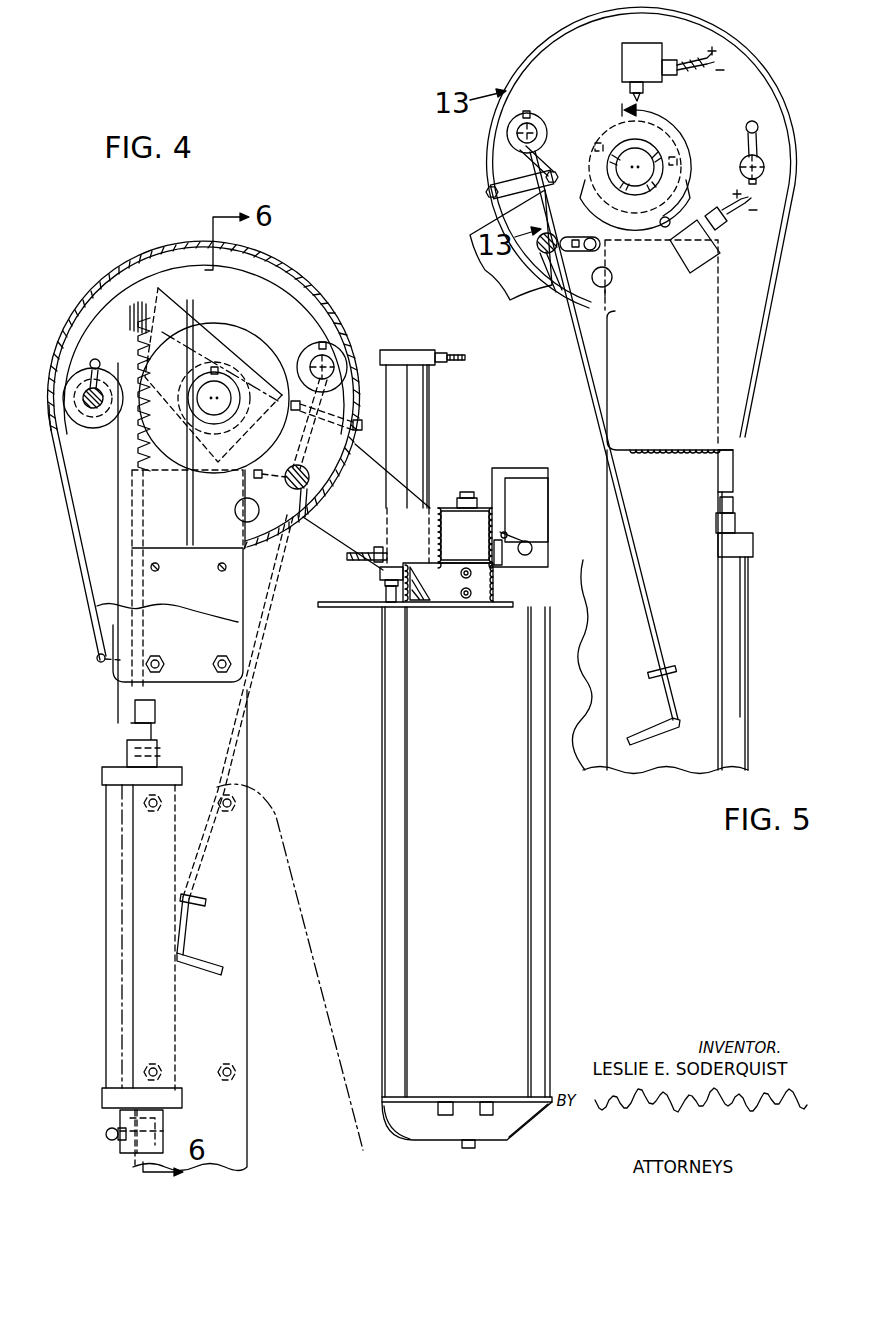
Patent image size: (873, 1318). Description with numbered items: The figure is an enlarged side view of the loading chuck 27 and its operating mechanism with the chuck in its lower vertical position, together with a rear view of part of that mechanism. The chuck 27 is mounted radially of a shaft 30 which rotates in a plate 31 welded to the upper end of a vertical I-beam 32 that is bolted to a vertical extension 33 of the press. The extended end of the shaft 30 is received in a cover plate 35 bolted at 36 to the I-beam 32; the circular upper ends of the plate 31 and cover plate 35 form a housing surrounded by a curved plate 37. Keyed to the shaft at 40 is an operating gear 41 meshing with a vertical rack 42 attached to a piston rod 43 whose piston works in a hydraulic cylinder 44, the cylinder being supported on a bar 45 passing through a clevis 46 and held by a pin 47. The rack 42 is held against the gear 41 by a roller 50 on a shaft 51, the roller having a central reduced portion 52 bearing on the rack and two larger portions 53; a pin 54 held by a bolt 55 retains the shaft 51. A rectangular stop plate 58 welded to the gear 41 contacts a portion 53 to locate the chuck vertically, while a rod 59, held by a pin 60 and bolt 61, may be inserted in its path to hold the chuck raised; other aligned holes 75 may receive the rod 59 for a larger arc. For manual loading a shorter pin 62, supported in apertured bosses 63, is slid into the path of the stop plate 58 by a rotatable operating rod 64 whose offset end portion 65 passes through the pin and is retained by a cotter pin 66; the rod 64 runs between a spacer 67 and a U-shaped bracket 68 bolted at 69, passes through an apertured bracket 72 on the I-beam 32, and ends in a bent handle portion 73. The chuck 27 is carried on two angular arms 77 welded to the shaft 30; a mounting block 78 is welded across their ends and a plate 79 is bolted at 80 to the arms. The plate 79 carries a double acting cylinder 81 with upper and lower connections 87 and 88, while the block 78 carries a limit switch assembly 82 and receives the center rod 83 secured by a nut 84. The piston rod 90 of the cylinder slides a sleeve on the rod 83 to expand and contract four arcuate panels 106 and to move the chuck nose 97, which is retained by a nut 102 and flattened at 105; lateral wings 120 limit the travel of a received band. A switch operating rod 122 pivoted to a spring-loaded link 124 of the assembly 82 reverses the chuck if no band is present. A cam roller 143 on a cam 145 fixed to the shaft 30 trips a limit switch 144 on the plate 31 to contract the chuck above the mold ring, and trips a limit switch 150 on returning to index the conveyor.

In FIG. 4, the chuck 27 is at (558, 872).
In FIG. 4, the shaft 30 is at (198, 394).
In FIG. 5, the shaft 30 is at (630, 148).
In FIG. 4, the plate 31 is at (95, 583).
In FIG. 5, the plate 31 is at (760, 319).
In FIG. 4, the I-beam 32 is at (243, 750).
In FIG. 5, the I-beam 32 is at (708, 493).
In FIG. 4, the vertical extension 33 is at (281, 865).
In FIG. 5, the vertical extension 33 is at (595, 760).
In FIG. 4, the cover plate 35 is at (232, 643).
In FIG. 5, the cover plate 35 is at (670, 382).
In FIG. 4, the bolts 36 is at (218, 571).
In FIG. 4, the curved plate 37 is at (78, 548).
In FIG. 5, the curved plate 37 is at (777, 292).
In FIG. 4, the key 40 is at (217, 368).
In FIG. 4, the operating gear 41 is at (160, 311).
In FIG. 4, the vertical rack 42 is at (118, 502).
In FIG. 5, the vertical rack 42 is at (733, 462).
In FIG. 4, the piston rod 43 is at (130, 733).
In FIG. 5, the piston rod 43 is at (734, 504).
In FIG. 4, the hydraulic cylinder 44 is at (106, 846).
In FIG. 5, the hydraulic cylinder 44 is at (738, 606).
In FIG. 4, the bar 45 is at (135, 1160).
In FIG. 4, the clevis 46 is at (120, 1115).
In FIG. 4, the pin 47 is at (106, 1134).
In FIG. 4, the roller 50 is at (71, 428).
In FIG. 4, the shaft 51 is at (98, 391).
In FIG. 5, the shaft 51 is at (760, 172).
In FIG. 4, the central reduced portion 52 is at (73, 387).
In FIG. 4, the larger portions 53 is at (108, 423).
In FIG. 4, the pin 54 is at (89, 360).
In FIG. 5, the pin 54 is at (748, 145).
In FIG. 4, the bolt 55 is at (95, 358).
In FIG. 5, the bolt 55 is at (746, 124).
In FIG. 4, the stop plate 58 is at (158, 305).
In FIG. 4, the rod 59 is at (302, 520).
In FIG. 5, the rod 59 is at (553, 283).
In FIG. 4, the pin 60 is at (303, 473).
In FIG. 5, the pin 60 is at (560, 296).
In FIG. 4, the bolt 61 is at (252, 478).
In FIG. 5, the bolt 61 is at (601, 249).
In FIG. 4, the pin 62 is at (326, 366).
In FIG. 5, the pin 62 is at (515, 135).
In FIG. 4, the apertured bosses 63 is at (311, 348).
In FIG. 5, the apertured bosses 63 is at (548, 128).
In FIG. 4, the operating rod 64 is at (266, 608).
In FIG. 5, the operating rod 64 is at (593, 418).
In FIG. 5, the offset end portion 65 is at (528, 163).
In FIG. 4, the cotter pin 66 is at (328, 334).
In FIG. 5, the cotter pin 66 is at (530, 118).
In FIG. 4, the spacer 67 is at (359, 418).
In FIG. 5, the U-shaped bracket 68 is at (525, 190).
In FIG. 4, the bolts 69 is at (360, 430).
In FIG. 5, the bolts 69 is at (489, 196).
In FIG. 4, the apertured bracket 72 is at (199, 905).
In FIG. 5, the apertured bracket 72 is at (671, 663).
In FIG. 4, the handle portion 73 is at (208, 975).
In FIG. 5, the handle portion 73 is at (660, 730).
In FIG. 4, the aligned holes 75 is at (243, 516).
In FIG. 5, the aligned holes 75 is at (608, 288).
In FIG. 4, the arms 77 is at (342, 527).
In FIG. 5, the arms 77 is at (492, 273).
In FIG. 4, the mounting block 78 is at (447, 506).
In FIG. 4, the plate 79 is at (383, 573).
In FIG. 4, the bolts 80 is at (388, 584).
In FIG. 4, the double acting cylinder 81 is at (430, 416).
In FIG. 4, the limit switch assembly 82 is at (545, 508).
In FIG. 4, the center rod 83 is at (467, 492).
In FIG. 4, the nut 84 is at (465, 535).
In FIG. 4, the upper connection 87 is at (443, 352).
In FIG. 4, the lower connection 88 is at (357, 550).
In FIG. 4, the piston rod 90 is at (398, 599).
In FIG. 4, the chuck nose 97 is at (401, 1137).
In FIG. 4, the nut 102 is at (452, 1142).
In FIG. 4, the flattened portion 105 is at (535, 1133).
In FIG. 4, the arcuate panels 106 is at (403, 900).
In FIG. 4, the lateral wings 120 is at (455, 610).
In FIG. 4, the switch operating rod 122 is at (508, 556).
In FIG. 4, the link 124 is at (531, 541).
In FIG. 5, the cam roller 143 is at (675, 217).
In FIG. 5, the limit switch 144 is at (706, 253).
In FIG. 5, the cam 145 is at (583, 197).
In FIG. 5, the limit switch 150 is at (652, 62).